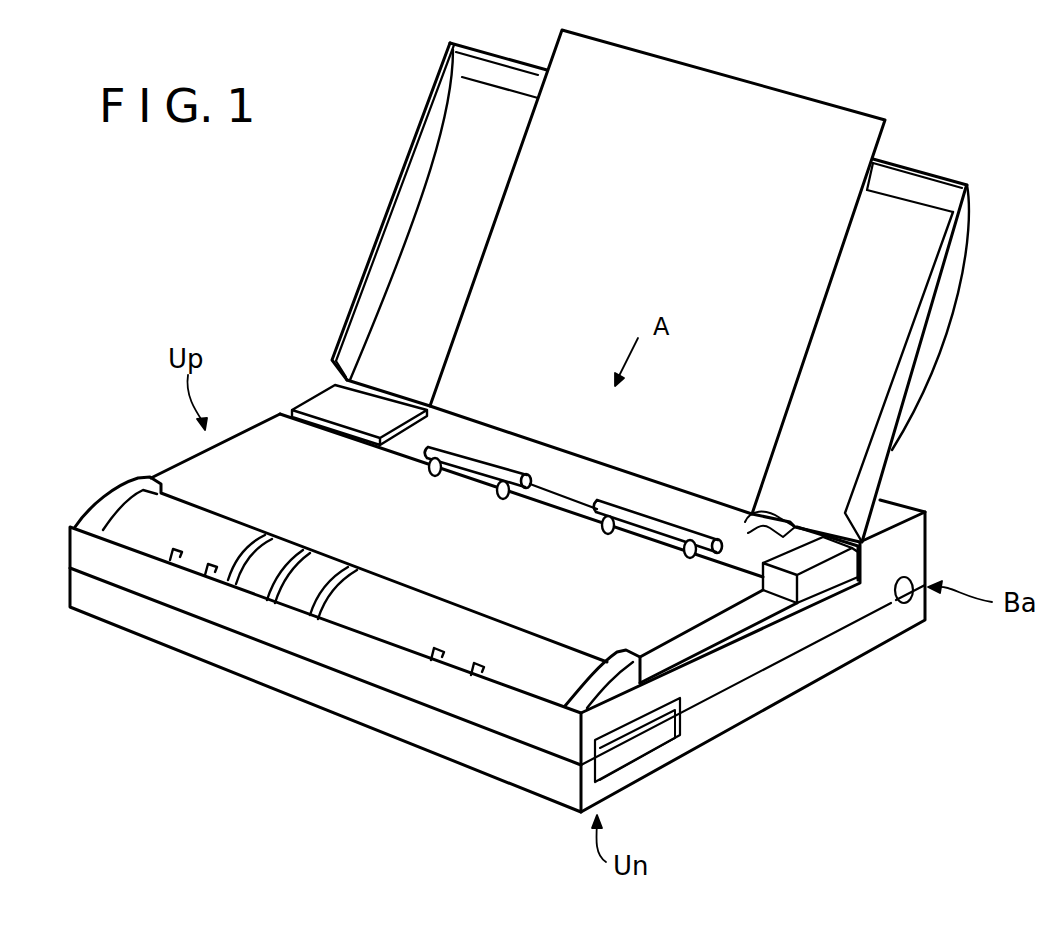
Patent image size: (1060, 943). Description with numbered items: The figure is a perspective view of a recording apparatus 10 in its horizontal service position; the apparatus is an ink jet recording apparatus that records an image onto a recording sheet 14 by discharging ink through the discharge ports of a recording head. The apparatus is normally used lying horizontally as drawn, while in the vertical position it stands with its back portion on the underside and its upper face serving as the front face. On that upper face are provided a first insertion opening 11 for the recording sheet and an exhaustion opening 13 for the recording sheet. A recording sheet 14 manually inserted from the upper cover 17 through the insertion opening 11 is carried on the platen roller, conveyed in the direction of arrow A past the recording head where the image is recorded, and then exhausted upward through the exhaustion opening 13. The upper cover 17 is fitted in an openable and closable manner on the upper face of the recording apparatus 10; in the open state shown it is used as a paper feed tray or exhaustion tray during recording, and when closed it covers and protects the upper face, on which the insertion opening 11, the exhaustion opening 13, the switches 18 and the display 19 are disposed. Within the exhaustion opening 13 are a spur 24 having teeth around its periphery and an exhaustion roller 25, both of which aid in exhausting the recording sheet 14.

The recording apparatus 10 is at (913, 538).
The first insertion opening 11 is at (705, 487).
The exhaustion opening 13 is at (570, 502).
The recording sheet 14 is at (798, 108).
The upper cover 17 is at (920, 167).
The switches 18 is at (360, 617).
The display 19 is at (208, 574).
The spur 24 is at (500, 497).
The exhaustion roller 25 is at (463, 458).